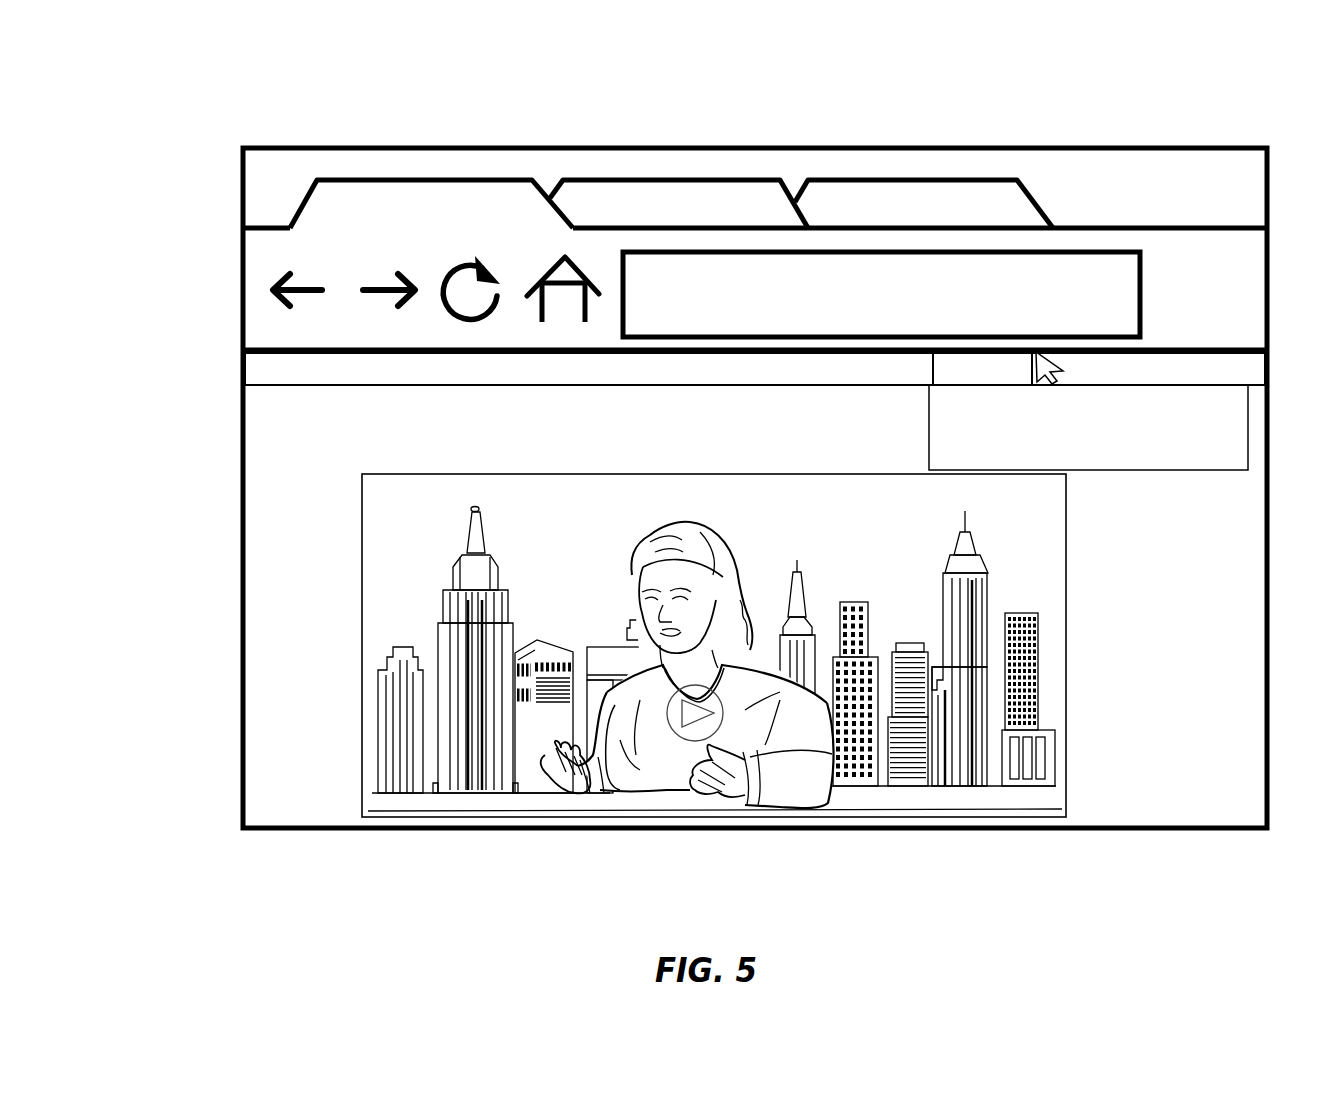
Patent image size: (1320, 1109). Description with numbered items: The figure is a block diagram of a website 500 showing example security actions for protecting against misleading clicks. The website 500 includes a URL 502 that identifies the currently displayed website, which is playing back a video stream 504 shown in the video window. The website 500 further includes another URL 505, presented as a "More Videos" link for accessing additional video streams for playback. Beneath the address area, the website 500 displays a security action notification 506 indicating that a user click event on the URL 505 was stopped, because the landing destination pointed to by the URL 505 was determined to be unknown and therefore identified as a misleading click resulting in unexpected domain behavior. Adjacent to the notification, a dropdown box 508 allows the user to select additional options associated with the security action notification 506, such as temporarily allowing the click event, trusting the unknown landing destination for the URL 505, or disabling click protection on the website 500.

The website 500 is at (158, 143).
The URL 502 is at (881, 294).
The video stream 504 is at (368, 542).
The URL 505 is at (248, 432).
The security action notification 506 is at (248, 377).
The dropdown box 508 is at (1248, 413).